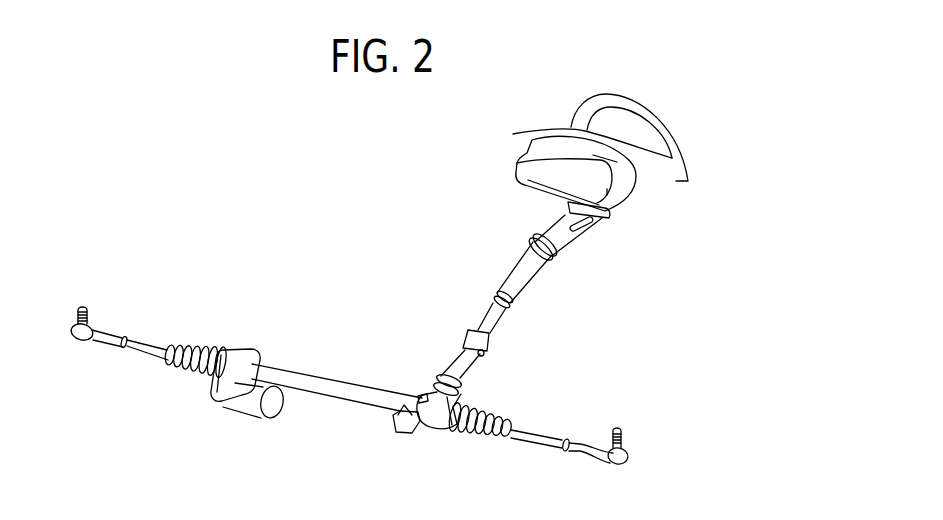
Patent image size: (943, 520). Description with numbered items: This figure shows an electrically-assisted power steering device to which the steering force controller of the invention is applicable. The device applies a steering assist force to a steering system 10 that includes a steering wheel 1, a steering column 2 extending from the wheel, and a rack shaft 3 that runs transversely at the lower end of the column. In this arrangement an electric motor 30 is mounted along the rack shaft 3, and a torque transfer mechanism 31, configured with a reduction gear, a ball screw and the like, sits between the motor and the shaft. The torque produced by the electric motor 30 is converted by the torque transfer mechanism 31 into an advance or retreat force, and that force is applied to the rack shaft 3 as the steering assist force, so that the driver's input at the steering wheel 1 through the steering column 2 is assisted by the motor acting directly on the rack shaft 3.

The steering wheel 1 is at (668, 127).
The steering column 2 is at (563, 235).
The rack shaft 3 is at (327, 377).
The steering system 10 is at (577, 328).
The electric motor 30 is at (242, 403).
The torque transfer mechanism 31 is at (233, 357).